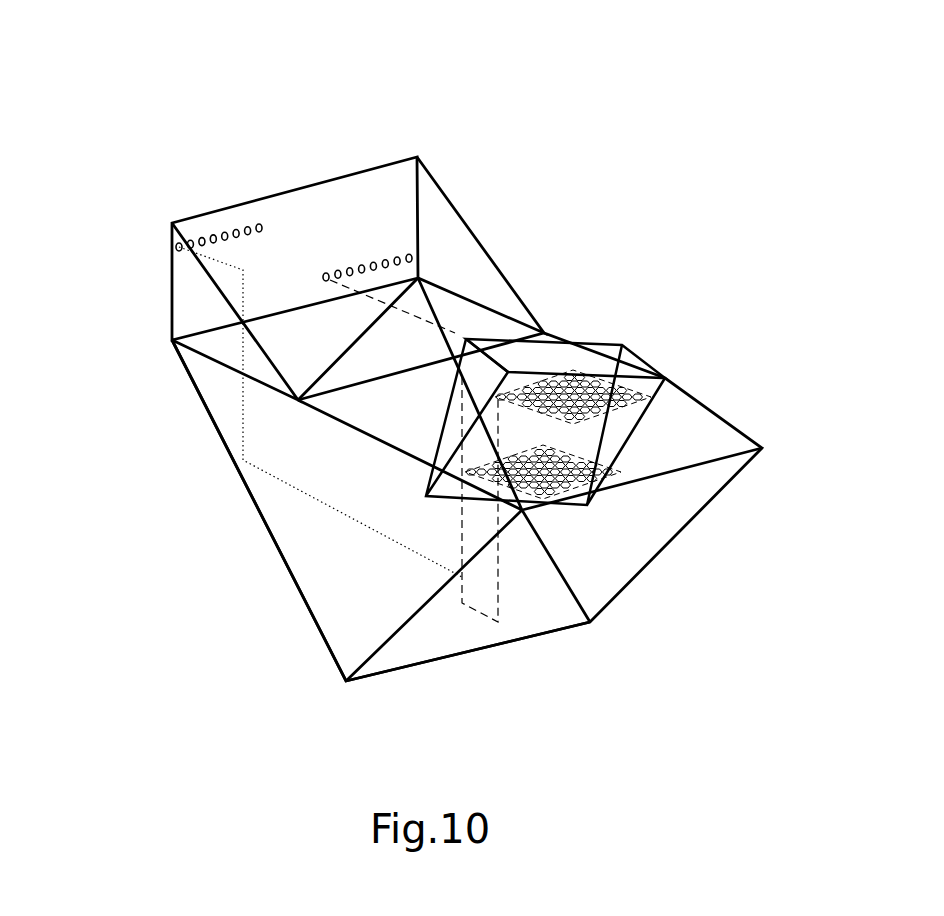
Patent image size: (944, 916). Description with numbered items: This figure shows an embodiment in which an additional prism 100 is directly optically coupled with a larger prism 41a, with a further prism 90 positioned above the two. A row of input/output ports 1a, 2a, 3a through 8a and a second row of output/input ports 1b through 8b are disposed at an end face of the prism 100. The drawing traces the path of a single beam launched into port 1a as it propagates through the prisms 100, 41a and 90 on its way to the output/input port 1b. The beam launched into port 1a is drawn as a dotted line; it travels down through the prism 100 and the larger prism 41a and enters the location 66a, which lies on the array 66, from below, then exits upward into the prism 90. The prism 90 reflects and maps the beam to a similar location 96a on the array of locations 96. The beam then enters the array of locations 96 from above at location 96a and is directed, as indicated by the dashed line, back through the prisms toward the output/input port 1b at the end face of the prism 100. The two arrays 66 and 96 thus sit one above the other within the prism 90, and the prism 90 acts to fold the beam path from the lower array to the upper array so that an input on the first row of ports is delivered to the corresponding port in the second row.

The prism 100 is at (290, 217).
The larger prism 41a is at (338, 605).
The input/output port 1a is at (178, 242).
The input/output port 2a is at (189, 238).
The input/output port 3a is at (202, 236).
The input/output port 8a is at (259, 223).
The output/input port 1b is at (328, 270).
The output/input port 8b is at (413, 252).
The prism 90 is at (637, 352).
The location 96a is at (455, 338).
The array of locations 96 is at (653, 397).
The lower micromirror array 66 is at (615, 488).
The location 66a is at (480, 475).